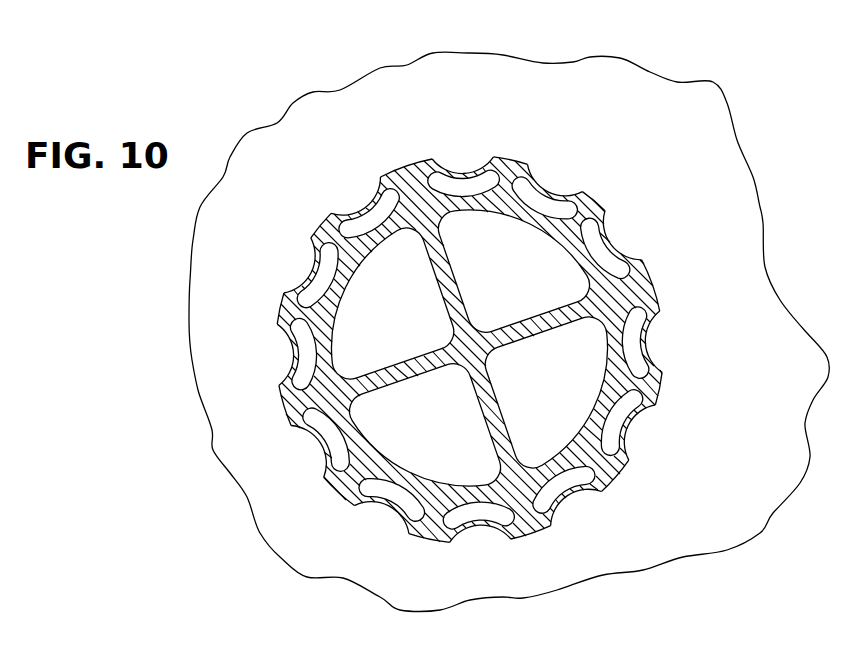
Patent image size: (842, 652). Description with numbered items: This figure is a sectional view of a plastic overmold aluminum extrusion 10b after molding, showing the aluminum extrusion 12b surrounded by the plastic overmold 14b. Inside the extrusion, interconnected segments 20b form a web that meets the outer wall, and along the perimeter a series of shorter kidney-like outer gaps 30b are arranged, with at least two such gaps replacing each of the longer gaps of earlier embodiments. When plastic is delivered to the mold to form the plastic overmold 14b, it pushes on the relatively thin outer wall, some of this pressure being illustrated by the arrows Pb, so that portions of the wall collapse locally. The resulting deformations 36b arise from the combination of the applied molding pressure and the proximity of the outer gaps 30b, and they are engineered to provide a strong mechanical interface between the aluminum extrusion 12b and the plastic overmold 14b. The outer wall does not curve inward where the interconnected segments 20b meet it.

The plastic overmold aluminum extrusion 10b is at (692, 62).
The aluminum extrusion 12b is at (678, 265).
The plastic overmold 14b is at (746, 568).
The interconnected segments 20b is at (452, 266).
The outer gaps 30b is at (652, 338).
The deformations 36b is at (643, 333).
The pressure arrows Pb is at (283, 258).